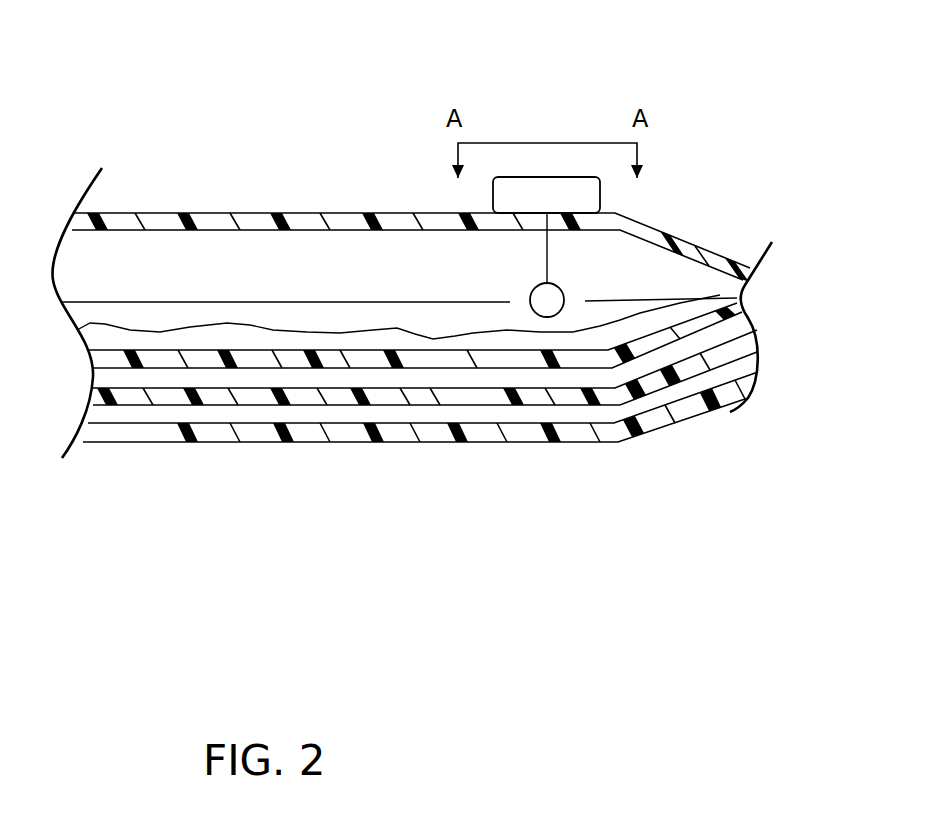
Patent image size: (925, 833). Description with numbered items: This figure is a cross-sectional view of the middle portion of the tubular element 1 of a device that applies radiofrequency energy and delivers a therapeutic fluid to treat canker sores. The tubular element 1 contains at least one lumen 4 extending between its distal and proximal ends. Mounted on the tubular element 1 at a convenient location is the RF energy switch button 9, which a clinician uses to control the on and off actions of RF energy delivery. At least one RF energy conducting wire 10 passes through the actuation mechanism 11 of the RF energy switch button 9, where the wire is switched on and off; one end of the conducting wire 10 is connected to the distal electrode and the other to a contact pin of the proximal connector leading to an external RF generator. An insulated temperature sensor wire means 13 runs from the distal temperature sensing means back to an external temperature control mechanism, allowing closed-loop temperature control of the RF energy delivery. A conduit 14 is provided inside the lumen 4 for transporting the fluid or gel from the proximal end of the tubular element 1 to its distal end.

The tubular element 1 is at (158, 210).
The lumen 4 is at (217, 270).
The RF energy switch button 9 is at (573, 172).
The RF energy conducting wire 10 is at (647, 293).
The actuation mechanism 11 is at (560, 285).
The insulated temperature sensor wire means 13 is at (594, 324).
The conduit 14 is at (502, 375).